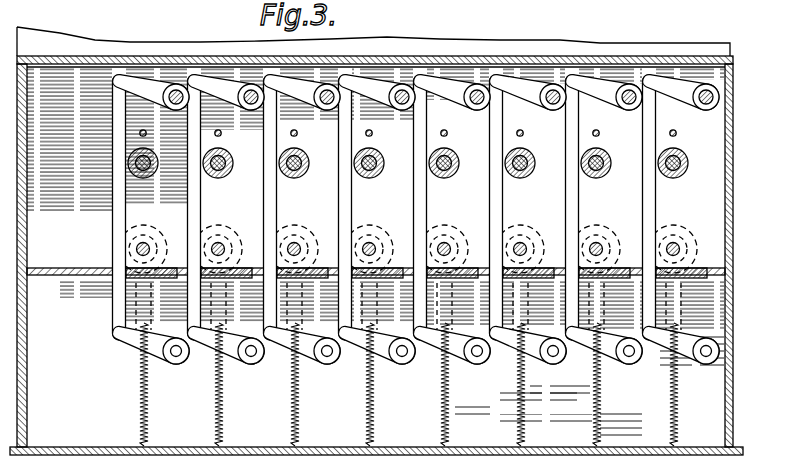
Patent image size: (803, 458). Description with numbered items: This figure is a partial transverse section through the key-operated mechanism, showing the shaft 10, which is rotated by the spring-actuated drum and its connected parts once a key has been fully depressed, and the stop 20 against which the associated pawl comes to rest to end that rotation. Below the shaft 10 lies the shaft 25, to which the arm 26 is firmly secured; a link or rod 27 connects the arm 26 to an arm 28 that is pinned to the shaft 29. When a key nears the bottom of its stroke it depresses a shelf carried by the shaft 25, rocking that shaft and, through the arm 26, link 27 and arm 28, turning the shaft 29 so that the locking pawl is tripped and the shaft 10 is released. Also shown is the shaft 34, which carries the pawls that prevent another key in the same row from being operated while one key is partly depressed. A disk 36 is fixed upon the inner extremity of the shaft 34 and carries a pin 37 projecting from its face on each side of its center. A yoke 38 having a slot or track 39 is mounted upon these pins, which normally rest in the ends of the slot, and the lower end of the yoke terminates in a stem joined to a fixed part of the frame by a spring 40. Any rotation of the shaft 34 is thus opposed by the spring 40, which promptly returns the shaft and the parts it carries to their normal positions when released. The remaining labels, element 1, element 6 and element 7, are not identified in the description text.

The machine 1 is at (556, 18).
The top frame bar 6 is at (444, 57).
The cross bar 7 is at (72, 276).
The shaft 10 is at (131, 169).
The stop 20 is at (223, 134).
The shaft 25 is at (175, 353).
The arm 26 is at (137, 337).
The link 27 is at (113, 143).
The arm 28 is at (416, 92).
The shaft 29 is at (176, 103).
The shaft 34 is at (152, 236).
The disk 36 is at (113, 223).
The pin 37 is at (196, 226).
The yoke 38 is at (229, 241).
The slot 39 is at (168, 278).
The spring 40 is at (138, 409).